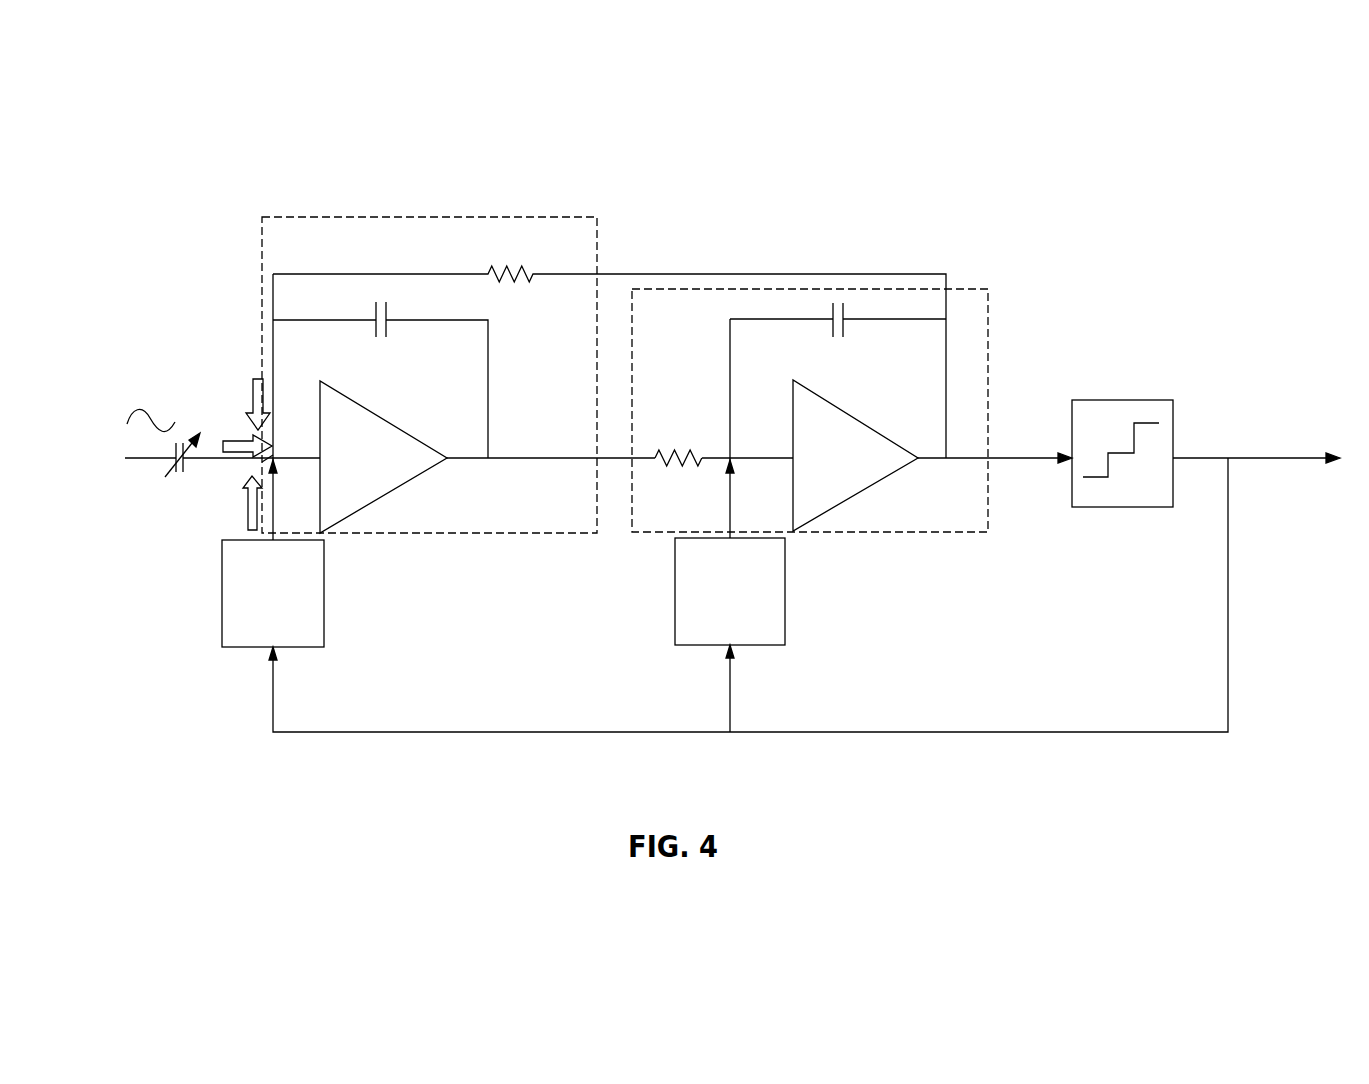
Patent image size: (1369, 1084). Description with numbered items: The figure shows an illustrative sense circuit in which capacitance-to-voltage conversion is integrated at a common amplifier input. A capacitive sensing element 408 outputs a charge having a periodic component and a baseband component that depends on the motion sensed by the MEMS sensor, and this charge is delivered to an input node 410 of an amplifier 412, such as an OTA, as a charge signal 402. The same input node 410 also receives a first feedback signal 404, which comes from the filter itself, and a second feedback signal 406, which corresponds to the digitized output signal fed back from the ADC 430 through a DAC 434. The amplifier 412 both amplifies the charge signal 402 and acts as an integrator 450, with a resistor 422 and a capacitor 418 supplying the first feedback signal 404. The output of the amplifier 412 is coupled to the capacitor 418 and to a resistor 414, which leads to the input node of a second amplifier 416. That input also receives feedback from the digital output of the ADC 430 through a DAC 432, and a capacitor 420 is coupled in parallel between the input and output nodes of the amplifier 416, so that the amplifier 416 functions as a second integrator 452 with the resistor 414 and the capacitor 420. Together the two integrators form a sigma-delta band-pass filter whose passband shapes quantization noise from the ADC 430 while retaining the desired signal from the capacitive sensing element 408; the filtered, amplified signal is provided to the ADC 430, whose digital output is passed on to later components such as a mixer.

The charge signal 402 is at (226, 441).
The first feedback signal 404 is at (254, 379).
The second feedback signal 406 is at (248, 505).
The capacitive sensing element 408 is at (174, 455).
The input node 410 is at (268, 460).
The amplifier 412 is at (384, 417).
The resistor 414 is at (662, 452).
The amplifier 416 is at (853, 418).
The capacitor 418 is at (378, 300).
The capacitor 420 is at (835, 302).
The resistor 422 is at (506, 259).
The ADC 430 is at (1147, 400).
The DAC 432 is at (675, 587).
The DAC 434 is at (324, 593).
The integrator 450 is at (350, 218).
The integrator 452 is at (712, 292).